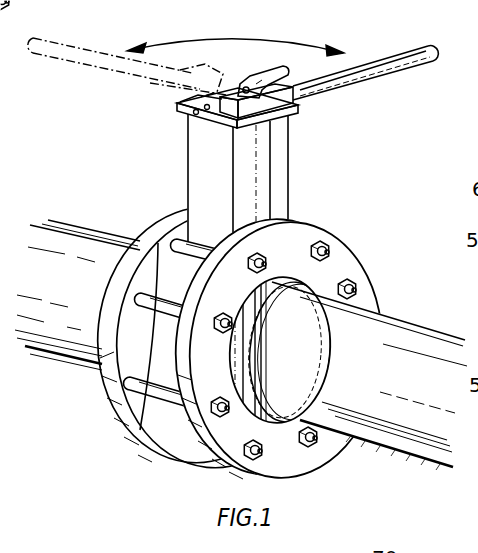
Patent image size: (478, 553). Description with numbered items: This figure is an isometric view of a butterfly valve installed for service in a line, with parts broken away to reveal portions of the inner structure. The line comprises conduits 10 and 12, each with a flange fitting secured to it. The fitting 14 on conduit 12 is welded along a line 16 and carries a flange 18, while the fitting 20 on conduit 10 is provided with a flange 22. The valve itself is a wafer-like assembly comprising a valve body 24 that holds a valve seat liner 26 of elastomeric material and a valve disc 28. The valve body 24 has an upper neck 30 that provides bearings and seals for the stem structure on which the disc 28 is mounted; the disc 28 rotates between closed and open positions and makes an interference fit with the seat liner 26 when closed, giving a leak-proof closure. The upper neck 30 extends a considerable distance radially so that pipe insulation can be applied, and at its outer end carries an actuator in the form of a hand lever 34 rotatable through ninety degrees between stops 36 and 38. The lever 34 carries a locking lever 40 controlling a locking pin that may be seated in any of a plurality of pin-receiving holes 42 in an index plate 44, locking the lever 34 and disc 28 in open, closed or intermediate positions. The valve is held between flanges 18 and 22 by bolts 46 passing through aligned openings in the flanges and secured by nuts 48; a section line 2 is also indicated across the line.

The section line 2- 2 is at (255, 362).
The conduit 10 is at (86, 243).
The conduit 12 is at (374, 427).
The fitting 14 is at (348, 262).
The weld line 16 is at (319, 312).
The flange 18 is at (303, 234).
The fitting 20 is at (158, 218).
The flange 22 is at (100, 358).
The valve body 24 is at (150, 343).
The valve seat liner 26 is at (312, 383).
The valve disc 28 is at (268, 372).
The upper neck 30 is at (283, 171).
The hand lever 34 is at (405, 52).
The stop 36 is at (298, 112).
The stop 38 is at (214, 100).
The locking lever 40 is at (262, 76).
The pin-receiving holes 42 is at (205, 110).
The index plate 44 is at (180, 110).
The bolts 46 is at (200, 240).
The nuts 48 is at (258, 254).